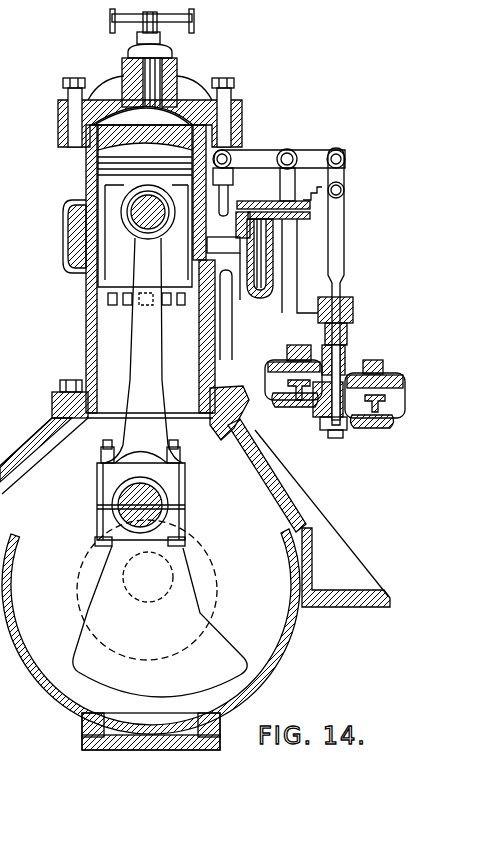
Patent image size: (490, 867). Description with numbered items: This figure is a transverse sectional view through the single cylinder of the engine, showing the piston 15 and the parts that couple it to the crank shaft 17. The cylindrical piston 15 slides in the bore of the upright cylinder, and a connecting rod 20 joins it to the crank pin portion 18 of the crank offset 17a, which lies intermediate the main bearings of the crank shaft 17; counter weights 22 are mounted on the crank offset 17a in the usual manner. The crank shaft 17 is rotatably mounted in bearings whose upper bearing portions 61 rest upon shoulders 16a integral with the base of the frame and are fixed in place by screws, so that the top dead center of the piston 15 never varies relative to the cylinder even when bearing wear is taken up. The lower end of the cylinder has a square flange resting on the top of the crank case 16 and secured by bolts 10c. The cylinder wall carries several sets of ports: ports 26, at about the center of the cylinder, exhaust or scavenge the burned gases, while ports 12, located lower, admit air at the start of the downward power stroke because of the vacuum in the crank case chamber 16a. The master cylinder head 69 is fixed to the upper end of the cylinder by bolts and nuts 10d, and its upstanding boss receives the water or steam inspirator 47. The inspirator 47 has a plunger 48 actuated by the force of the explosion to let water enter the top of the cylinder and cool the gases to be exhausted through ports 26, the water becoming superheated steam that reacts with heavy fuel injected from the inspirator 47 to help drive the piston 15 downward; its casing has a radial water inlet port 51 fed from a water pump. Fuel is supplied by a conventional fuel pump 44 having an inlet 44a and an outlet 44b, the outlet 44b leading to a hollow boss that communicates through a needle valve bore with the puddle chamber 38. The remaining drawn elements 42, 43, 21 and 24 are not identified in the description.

The water inlet port 51 is at (130, 30).
The water or steam inspirator 47 is at (122, 72).
The plunger 48 is at (160, 85).
The master cylinder head 69 is at (193, 92).
The nuts 10d is at (236, 88).
The puddle chamber 38 is at (173, 118).
The rocker arm 42 is at (257, 147).
The link 43 is at (345, 167).
The piston 15 is at (128, 157).
The ports 26 is at (75, 243).
The ports 12 is at (110, 305).
The connecting rod 20 is at (153, 371).
The bolts 10c is at (56, 388).
The outlet 44b is at (268, 377).
The fuel pump 44 is at (400, 397).
The inlet 44a is at (393, 423).
The cam follower housing 24 is at (247, 408).
The upper bearing portions 61 is at (298, 478).
The connecting rod cap 21 is at (107, 492).
The crank pin portion 18 is at (163, 500).
The crank offset 17a is at (180, 567).
The crank shaft 17 is at (138, 600).
The crank case chamber 16a is at (278, 577).
The crank case 16 is at (300, 628).
The counter weights 22 is at (235, 666).